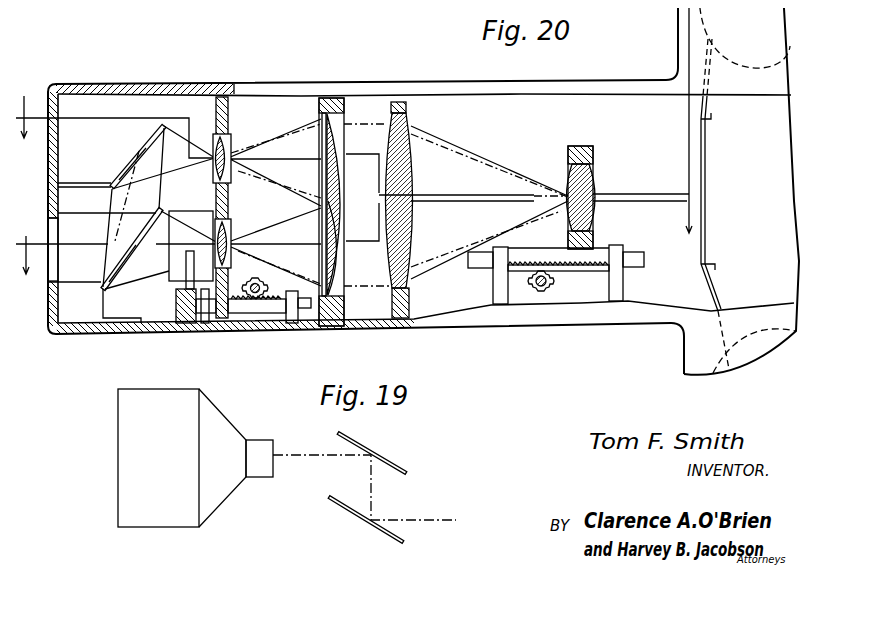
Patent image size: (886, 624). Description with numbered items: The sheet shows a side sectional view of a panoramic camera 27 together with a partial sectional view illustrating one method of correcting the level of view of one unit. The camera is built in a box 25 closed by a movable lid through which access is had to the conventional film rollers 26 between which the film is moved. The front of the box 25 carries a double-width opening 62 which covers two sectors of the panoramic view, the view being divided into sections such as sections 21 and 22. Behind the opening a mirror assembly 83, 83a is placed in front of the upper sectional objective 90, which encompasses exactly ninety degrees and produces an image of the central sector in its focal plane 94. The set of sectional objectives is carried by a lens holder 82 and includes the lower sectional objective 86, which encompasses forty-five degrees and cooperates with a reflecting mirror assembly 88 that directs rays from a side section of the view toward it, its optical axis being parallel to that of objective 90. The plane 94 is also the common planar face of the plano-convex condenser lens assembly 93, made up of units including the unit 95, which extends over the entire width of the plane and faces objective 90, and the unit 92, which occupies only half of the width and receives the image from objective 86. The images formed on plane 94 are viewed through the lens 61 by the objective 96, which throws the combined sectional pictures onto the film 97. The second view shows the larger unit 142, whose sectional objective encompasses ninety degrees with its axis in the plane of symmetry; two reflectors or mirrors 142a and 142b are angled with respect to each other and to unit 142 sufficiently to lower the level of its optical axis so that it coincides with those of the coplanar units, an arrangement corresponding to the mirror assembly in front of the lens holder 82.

In FIG. 20, the box 25 is at (93, 88).
In FIG. 20, the section 21 is at (114, 131).
In FIG. 20, the section 22 is at (356, 160).
In FIG. 20, the opening 62 is at (57, 266).
In FIG. 20, the mirror assembly 83 is at (147, 139).
In FIG. 20, the mirror assembly 83a is at (151, 228).
In FIG. 20, the mirror assembly 88 is at (184, 216).
In FIG. 20, the set of sectional objectives 82 is at (232, 104).
In FIG. 20, the upper sectional objective 90 is at (228, 141).
In FIG. 20, the sectional objective 86 is at (230, 227).
In FIG. 20, the plano-convex lens assembly 93 is at (328, 110).
In FIG. 20, the plano-convex lens unit 95 is at (323, 143).
In FIG. 20, the focal plane 94 is at (338, 168).
In FIG. 20, the plano-convex lens unit 92 is at (342, 250).
In FIG. 20, the lens 61 is at (400, 180).
In FIG. 20, the objective 96 is at (591, 183).
In FIG. 20, the film 97 is at (706, 108).
In FIG. 20, the camera 27 is at (773, 336).
In FIG. 20, the film rollers 26 is at (741, 348).
In FIG. 19, the larger unit 142 is at (164, 412).
In FIG. 19, the mirror 142a is at (390, 460).
In FIG. 19, the mirror 142b is at (337, 509).